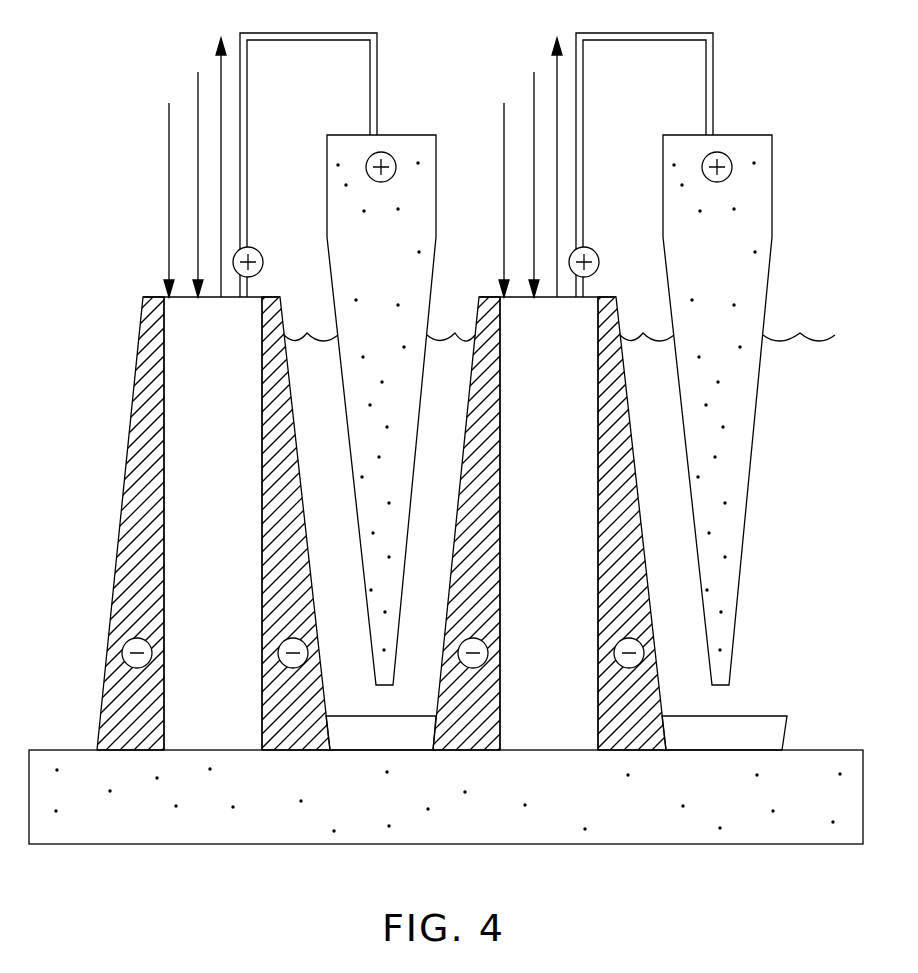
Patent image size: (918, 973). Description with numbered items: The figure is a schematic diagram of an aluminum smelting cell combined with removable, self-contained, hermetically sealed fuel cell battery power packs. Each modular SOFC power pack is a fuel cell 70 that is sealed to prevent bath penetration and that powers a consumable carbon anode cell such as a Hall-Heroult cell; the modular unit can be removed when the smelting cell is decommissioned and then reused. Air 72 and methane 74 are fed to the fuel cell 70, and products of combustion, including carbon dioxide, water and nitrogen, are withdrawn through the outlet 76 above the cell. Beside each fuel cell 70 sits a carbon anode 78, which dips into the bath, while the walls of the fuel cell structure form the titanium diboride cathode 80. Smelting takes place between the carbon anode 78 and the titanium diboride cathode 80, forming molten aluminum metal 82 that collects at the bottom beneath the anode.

The fuel cell 70 is at (196, 495).
The air 72 is at (360, 167).
The methane 74 is at (328, 186).
The outlet flow / electrical lead 76 is at (459, 150).
The carbon anode 78 is at (366, 262).
The titanium diboride cathode 80 is at (459, 523).
The molten aluminum metal 82 is at (370, 745).